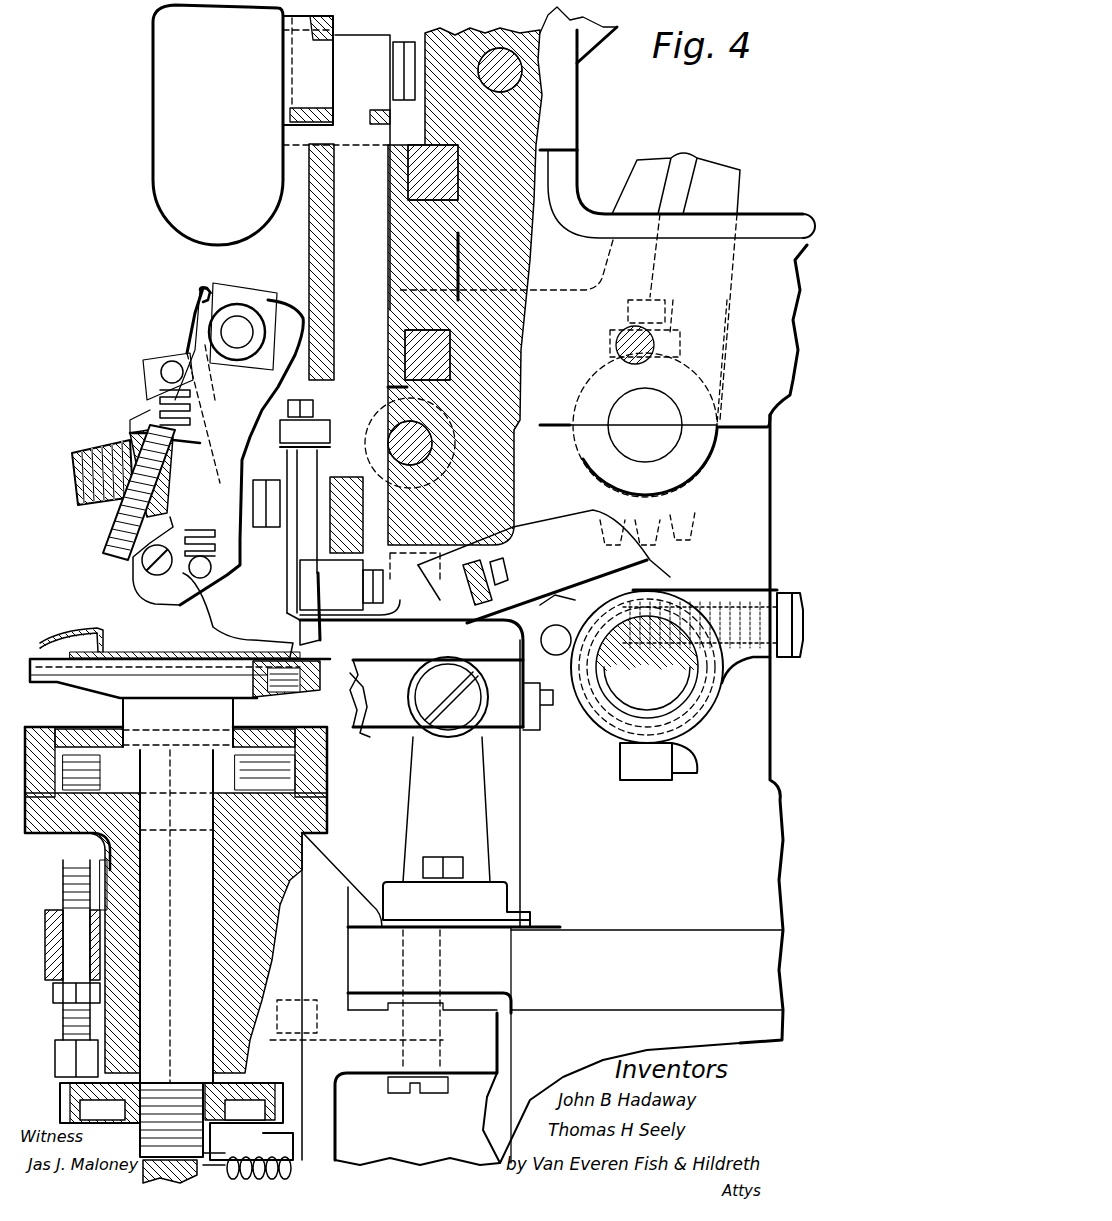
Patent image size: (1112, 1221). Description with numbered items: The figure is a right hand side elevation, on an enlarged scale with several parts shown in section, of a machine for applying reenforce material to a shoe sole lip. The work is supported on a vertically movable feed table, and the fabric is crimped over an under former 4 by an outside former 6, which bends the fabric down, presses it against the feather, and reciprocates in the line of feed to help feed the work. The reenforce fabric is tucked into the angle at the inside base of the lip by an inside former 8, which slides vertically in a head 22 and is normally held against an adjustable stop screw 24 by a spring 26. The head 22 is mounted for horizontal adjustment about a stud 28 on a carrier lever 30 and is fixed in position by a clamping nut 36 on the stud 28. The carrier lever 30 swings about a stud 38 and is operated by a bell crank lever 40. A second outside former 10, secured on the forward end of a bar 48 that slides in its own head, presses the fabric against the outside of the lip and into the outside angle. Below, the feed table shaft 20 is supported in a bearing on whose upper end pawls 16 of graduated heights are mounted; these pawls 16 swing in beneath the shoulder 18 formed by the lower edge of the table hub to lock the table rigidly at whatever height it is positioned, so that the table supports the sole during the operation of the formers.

The under former 4 is at (333, 685).
The outside former 6 is at (322, 640).
The inside former 8 is at (233, 643).
The outside former 10 is at (370, 633).
The pawls 16 is at (117, 745).
The shoulder 18 is at (143, 748).
The feed table shaft 20 is at (176, 916).
The head 22 is at (160, 597).
The adjustable stop screw 24 is at (112, 535).
The spring 26 is at (153, 435).
The stud 28 is at (225, 332).
The carrier lever 30 is at (300, 398).
The clamping nut 36 is at (200, 306).
The stud 38 is at (413, 428).
The bell crank lever 40 is at (330, 213).
The bar 48 is at (505, 577).